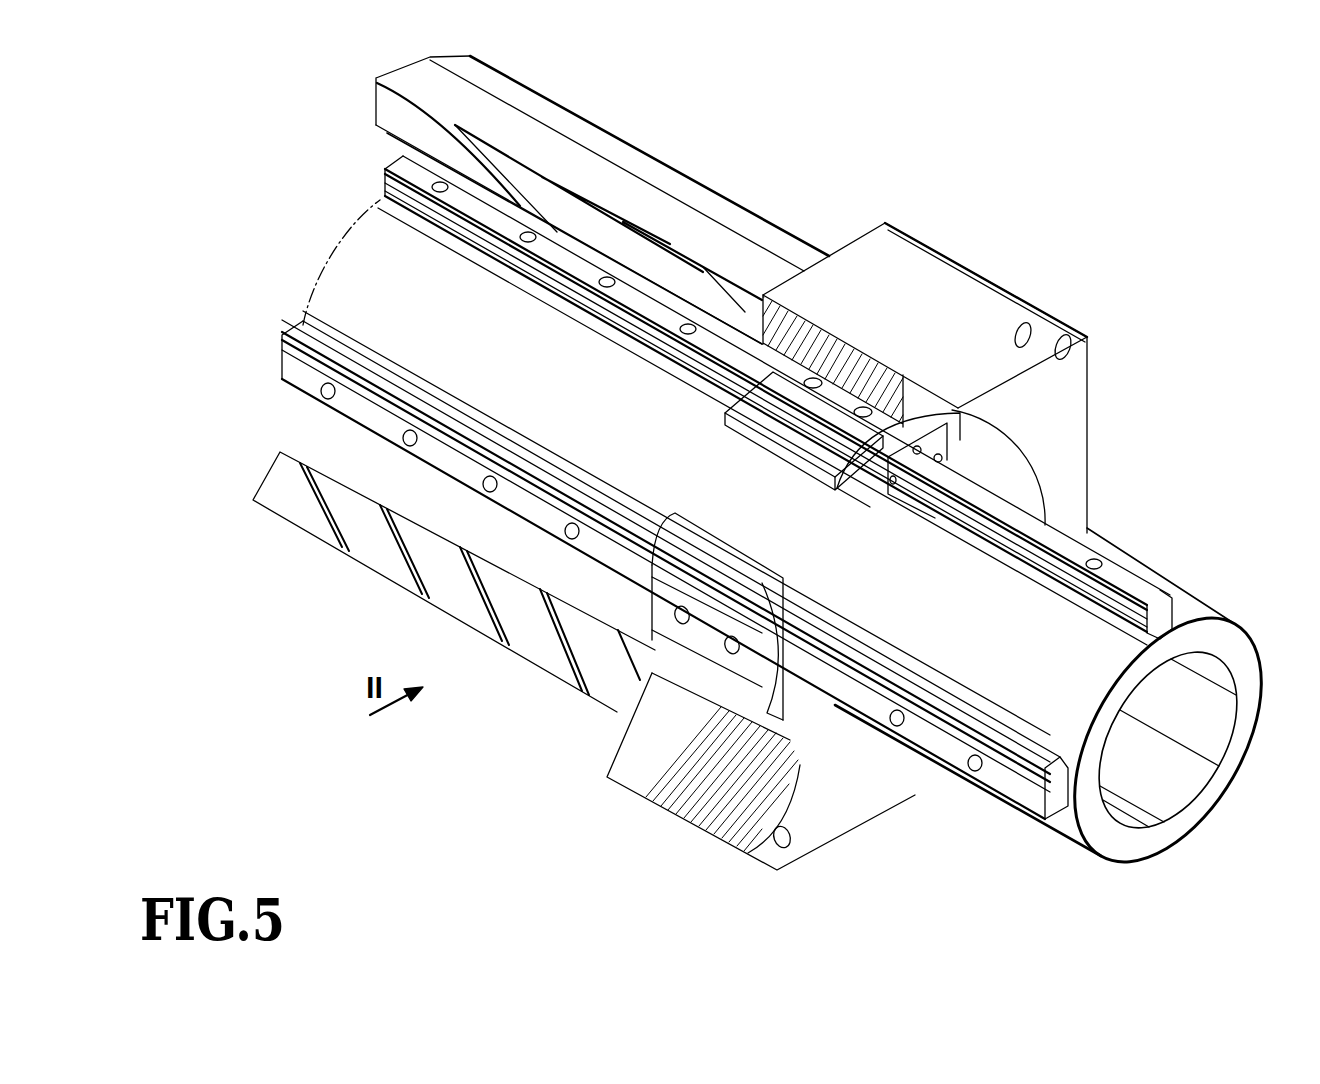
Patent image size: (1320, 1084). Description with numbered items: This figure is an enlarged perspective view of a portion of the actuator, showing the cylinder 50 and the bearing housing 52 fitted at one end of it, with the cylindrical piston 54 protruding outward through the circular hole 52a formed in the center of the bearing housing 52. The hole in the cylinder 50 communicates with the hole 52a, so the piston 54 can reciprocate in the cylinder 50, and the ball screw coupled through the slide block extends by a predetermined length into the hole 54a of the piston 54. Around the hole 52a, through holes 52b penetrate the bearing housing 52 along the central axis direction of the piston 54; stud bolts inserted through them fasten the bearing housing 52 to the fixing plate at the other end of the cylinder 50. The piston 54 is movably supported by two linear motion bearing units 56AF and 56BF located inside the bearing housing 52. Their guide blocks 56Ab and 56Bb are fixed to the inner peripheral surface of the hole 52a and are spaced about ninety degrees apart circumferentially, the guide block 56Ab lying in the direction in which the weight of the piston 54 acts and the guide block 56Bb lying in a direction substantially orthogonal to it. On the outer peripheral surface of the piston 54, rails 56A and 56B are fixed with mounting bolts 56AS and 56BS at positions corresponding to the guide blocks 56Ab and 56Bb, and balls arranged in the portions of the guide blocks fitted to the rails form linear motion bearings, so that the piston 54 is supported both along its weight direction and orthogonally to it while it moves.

The cylinder 50 is at (750, 230).
The bearing housing 52 is at (938, 280).
The hole of the bearing housing 52a is at (1007, 447).
The through holes of the bearing housing 52b is at (1070, 347).
The piston 54 is at (1187, 606).
The hole of the piston 54a is at (1156, 800).
The rail 56A is at (1150, 596).
The mounting bolts 56AS is at (1097, 559).
The linear motion bearing unit 56AF is at (775, 410).
The guide block 56Ab is at (938, 437).
The rail 56B is at (1027, 790).
The mounting bolts 56BS is at (975, 772).
The linear motion bearing unit 56BF is at (638, 660).
The guide block 56Bb is at (798, 690).